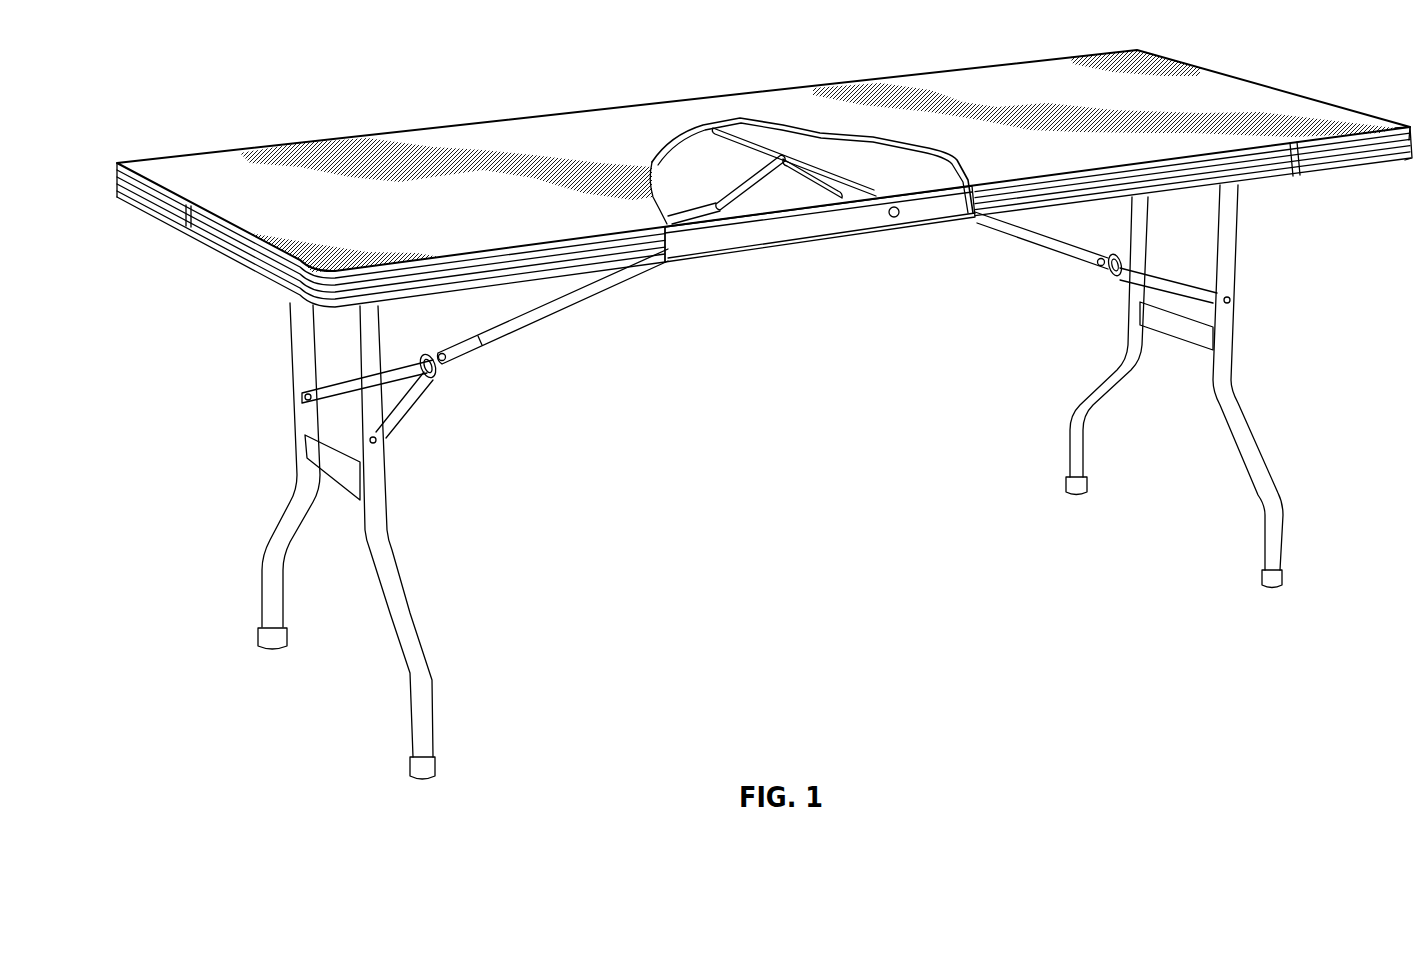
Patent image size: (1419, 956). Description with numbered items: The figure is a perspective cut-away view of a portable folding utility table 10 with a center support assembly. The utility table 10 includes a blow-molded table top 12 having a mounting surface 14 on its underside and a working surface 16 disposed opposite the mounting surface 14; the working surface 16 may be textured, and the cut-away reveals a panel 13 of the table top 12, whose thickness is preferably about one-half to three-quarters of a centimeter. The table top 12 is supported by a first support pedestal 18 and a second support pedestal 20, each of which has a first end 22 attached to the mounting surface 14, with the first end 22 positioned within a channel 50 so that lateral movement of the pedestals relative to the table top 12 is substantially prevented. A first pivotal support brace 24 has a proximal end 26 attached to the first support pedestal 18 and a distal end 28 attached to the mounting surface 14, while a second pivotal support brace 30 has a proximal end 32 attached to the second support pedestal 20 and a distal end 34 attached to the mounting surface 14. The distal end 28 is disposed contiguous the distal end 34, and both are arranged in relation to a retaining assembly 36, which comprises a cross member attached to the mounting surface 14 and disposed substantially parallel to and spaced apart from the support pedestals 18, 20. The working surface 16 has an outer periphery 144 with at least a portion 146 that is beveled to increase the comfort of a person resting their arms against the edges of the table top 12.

The utility table 10 is at (767, 399).
The table top 12 is at (767, 163).
The panel 13 is at (837, 130).
The mounting surface 14 is at (922, 155).
The working surface 16 is at (1006, 167).
The first support pedestal 18 is at (397, 548).
The second support pedestal 20 is at (1263, 440).
The first end 22 is at (302, 340).
The first pivotal support brace 24 is at (530, 320).
The proximal end 26 is at (430, 380).
The distal end 28 is at (747, 185).
The second pivotal support brace 30 is at (1010, 240).
The proximal end 32 is at (1140, 267).
The distal end 34 is at (832, 168).
The retaining assembly 36 is at (820, 178).
The channel 50 is at (962, 201).
The outer periphery 144 is at (1418, 173).
The portion 146 is at (1403, 125).